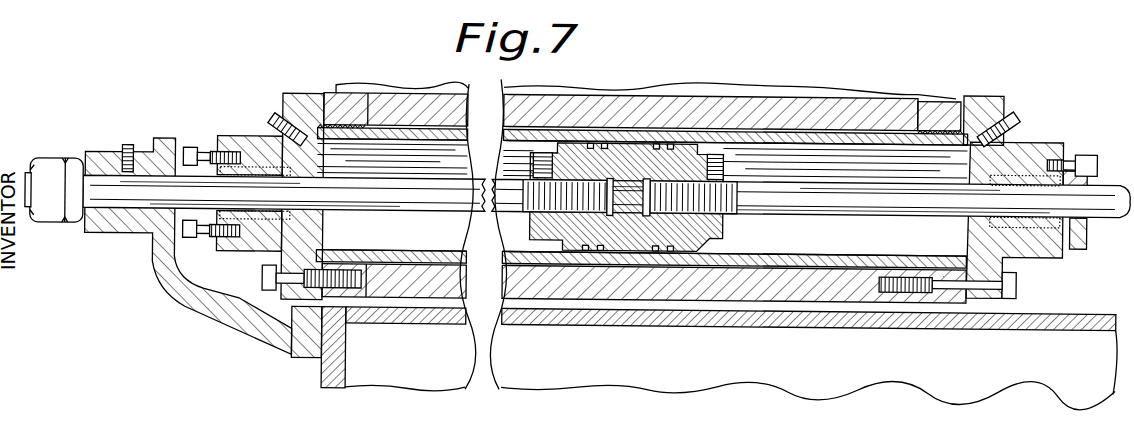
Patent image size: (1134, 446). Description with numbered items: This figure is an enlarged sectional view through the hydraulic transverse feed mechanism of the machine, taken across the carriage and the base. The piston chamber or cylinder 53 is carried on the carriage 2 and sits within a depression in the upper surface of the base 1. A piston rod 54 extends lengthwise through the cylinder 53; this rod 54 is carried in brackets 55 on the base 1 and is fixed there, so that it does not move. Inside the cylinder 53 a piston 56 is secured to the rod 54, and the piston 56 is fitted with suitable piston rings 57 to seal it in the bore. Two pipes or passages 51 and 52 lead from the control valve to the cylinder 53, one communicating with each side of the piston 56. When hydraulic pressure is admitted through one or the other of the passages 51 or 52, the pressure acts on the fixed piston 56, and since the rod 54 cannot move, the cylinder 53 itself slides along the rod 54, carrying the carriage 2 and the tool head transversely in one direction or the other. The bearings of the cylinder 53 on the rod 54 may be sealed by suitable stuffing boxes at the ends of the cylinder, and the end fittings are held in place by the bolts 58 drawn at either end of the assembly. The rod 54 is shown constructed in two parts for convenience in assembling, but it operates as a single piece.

The base 1 is at (322, 376).
The carriage 2 is at (760, 112).
The pipe or passage 51 is at (273, 120).
The pipe or passage 52 is at (1017, 117).
The piston chamber 53 is at (806, 135).
The piston rod 54 is at (100, 190).
The brackets 55 is at (97, 238).
The piston 56 is at (718, 224).
The piston rings 57 is at (659, 142).
The bolts 58 is at (214, 163).